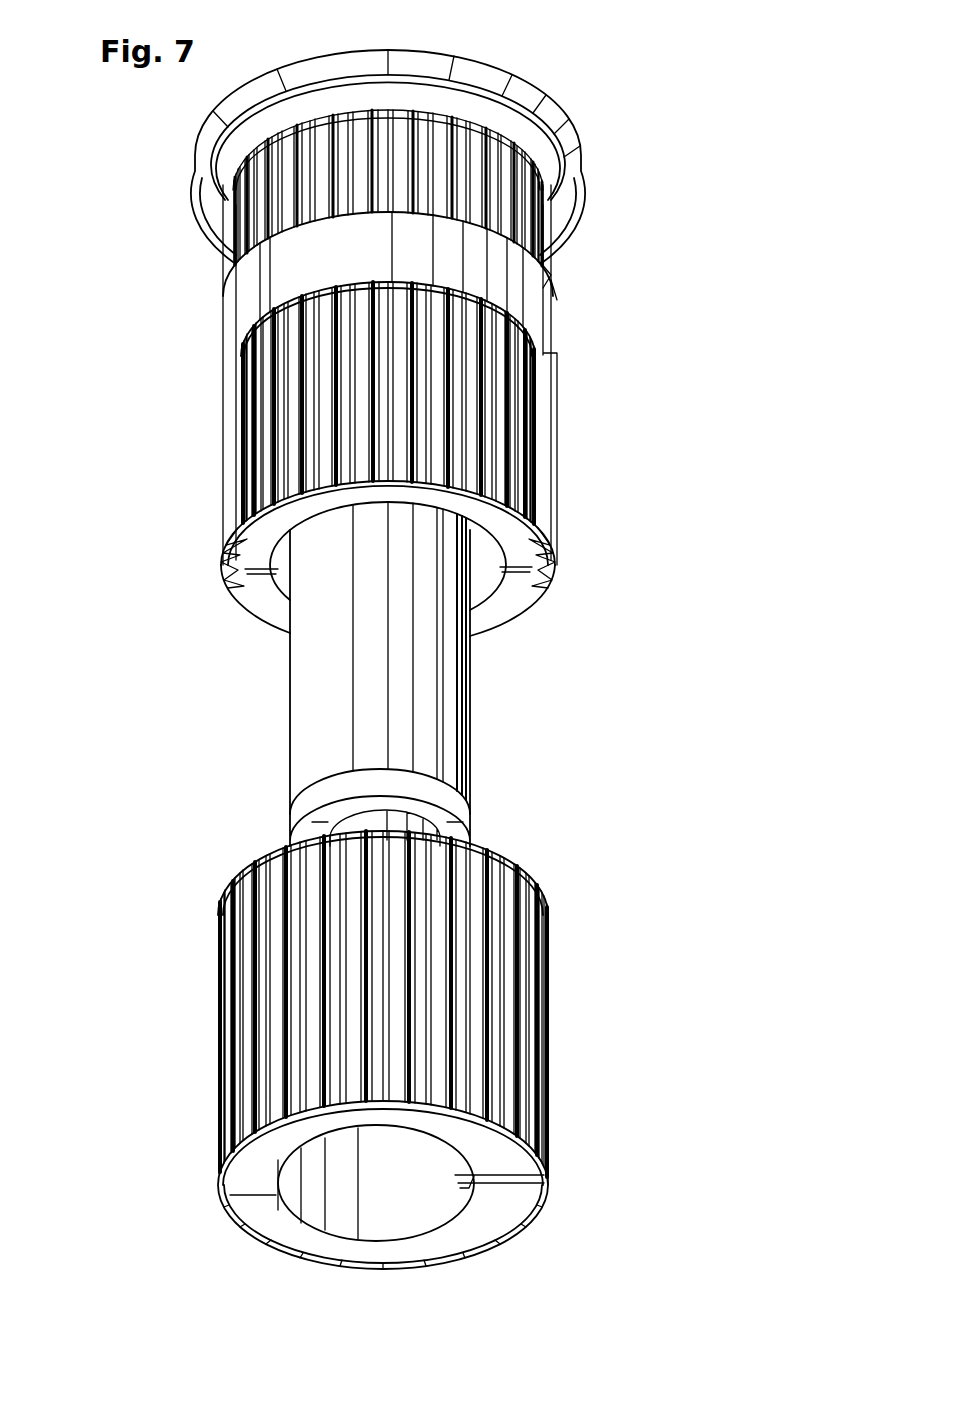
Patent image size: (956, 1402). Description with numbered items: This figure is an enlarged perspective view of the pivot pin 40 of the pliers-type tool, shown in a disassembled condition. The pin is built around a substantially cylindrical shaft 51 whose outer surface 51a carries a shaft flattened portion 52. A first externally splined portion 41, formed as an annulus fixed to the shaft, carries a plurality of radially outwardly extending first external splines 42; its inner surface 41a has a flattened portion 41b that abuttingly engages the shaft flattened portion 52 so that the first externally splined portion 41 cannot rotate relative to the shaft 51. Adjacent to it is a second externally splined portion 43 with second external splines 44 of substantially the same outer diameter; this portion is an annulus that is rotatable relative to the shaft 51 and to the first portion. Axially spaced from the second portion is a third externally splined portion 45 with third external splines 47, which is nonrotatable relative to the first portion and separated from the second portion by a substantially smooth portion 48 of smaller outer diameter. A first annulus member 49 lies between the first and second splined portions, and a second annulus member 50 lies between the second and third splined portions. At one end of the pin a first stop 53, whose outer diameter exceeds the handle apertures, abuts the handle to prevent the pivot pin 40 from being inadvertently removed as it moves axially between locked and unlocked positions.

The pivot pin 40 is at (174, 559).
The first externally splined portion 41 is at (527, 1053).
The inner surface 41a is at (380, 1217).
The flattened portion 41b is at (474, 1182).
The first external splines 42 is at (527, 980).
The second externally splined portion 43 is at (549, 490).
The second external splines 44 is at (530, 447).
The third externally splined portion 45 is at (549, 269).
The third external splines 47 is at (245, 200).
The substantially smooth portion 48 is at (277, 320).
The first annulus member 49 is at (498, 612).
The second annulus member 50 is at (268, 358).
The shaft 51 is at (446, 727).
The outer surface 51a is at (447, 763).
The shaft flattened portion 52 is at (468, 700).
The first stop 53 is at (455, 62).